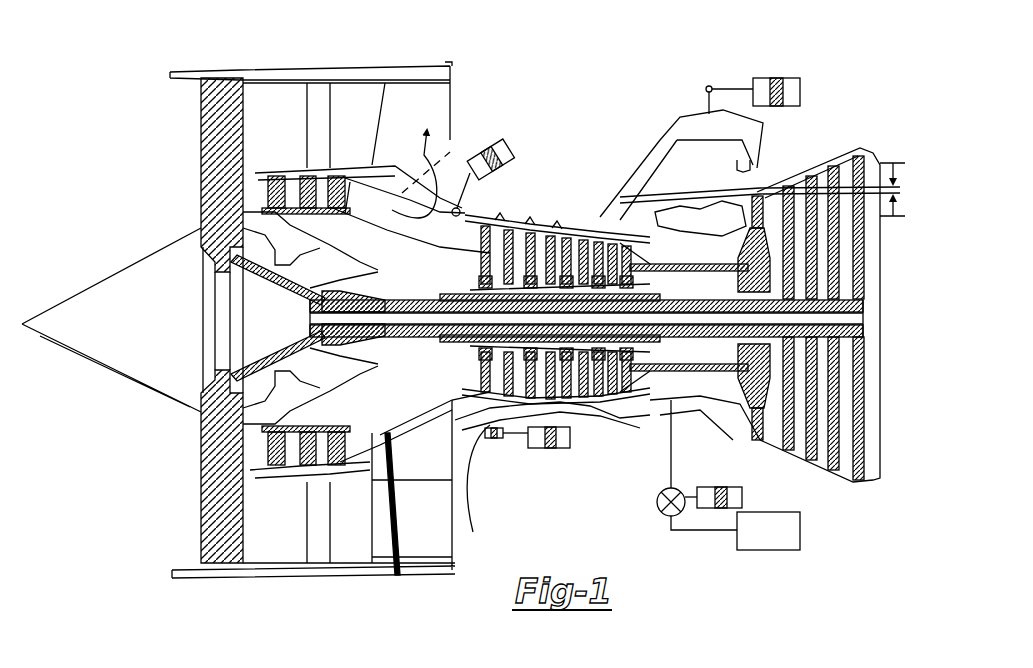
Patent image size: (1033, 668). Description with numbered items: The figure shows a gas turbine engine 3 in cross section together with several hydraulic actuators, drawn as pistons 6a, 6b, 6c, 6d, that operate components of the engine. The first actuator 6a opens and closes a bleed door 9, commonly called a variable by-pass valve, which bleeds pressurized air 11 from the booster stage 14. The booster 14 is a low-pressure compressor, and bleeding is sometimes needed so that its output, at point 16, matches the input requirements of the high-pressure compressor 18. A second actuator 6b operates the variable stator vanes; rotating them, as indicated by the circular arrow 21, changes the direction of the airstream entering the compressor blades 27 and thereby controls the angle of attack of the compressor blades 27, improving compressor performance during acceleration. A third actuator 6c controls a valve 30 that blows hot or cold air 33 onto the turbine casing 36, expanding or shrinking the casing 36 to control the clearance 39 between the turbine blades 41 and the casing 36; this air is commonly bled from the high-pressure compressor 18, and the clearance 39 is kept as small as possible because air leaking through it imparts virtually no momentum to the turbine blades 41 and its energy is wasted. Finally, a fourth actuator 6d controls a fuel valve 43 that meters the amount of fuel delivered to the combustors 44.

The gas turbine engine 3 is at (745, 72).
The actuator 6a is at (512, 172).
The actuator 6b is at (565, 449).
The actuator 6c is at (800, 80).
The actuator 6d is at (745, 480).
The bleed door 9 is at (462, 207).
The pressurized air 11 is at (414, 155).
The booster stage 14 is at (345, 140).
The point 16 is at (462, 238).
The high-pressure compressor 18 is at (648, 112).
The circular arrow 21 is at (512, 456).
The compressor blades 27 is at (560, 404).
The valve 30 is at (705, 128).
The air 33 is at (785, 155).
The turbine casing 36 is at (746, 174).
The clearance 39 is at (893, 162).
The turbine blades 41 is at (715, 196).
The fuel valve 43 is at (656, 506).
The combustors 44 is at (722, 420).